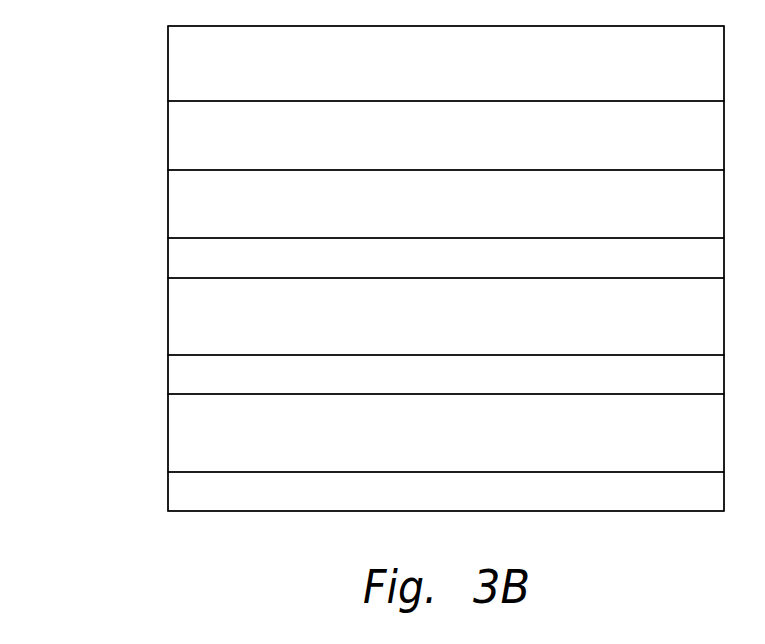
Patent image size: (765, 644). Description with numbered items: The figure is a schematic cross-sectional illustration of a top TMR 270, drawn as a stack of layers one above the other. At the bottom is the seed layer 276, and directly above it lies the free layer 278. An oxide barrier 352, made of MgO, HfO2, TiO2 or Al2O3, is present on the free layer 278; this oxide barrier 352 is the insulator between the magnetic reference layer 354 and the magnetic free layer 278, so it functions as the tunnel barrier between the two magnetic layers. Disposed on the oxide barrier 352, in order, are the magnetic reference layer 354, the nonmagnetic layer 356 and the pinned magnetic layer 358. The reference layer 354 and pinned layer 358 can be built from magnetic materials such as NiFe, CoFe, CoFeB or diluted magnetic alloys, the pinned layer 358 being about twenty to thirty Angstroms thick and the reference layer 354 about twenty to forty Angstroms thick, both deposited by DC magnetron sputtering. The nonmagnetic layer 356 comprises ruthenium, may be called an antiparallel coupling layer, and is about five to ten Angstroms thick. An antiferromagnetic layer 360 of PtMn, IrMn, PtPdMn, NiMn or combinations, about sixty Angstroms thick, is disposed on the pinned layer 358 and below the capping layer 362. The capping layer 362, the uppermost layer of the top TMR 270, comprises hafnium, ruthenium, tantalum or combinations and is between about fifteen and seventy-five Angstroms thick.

The top TMR 270 is at (378, 268).
The capping layer 362 is at (473, 75).
The antiferromagnetic layer 360 is at (473, 146).
The pinned magnetic layer 358 is at (473, 212).
The nonmagnetic layer 356 is at (473, 267).
The magnetic reference layer 354 is at (473, 324).
The oxide barrier 352 is at (473, 382).
The free layer 278 is at (473, 446).
The seed layer 276 is at (473, 501).